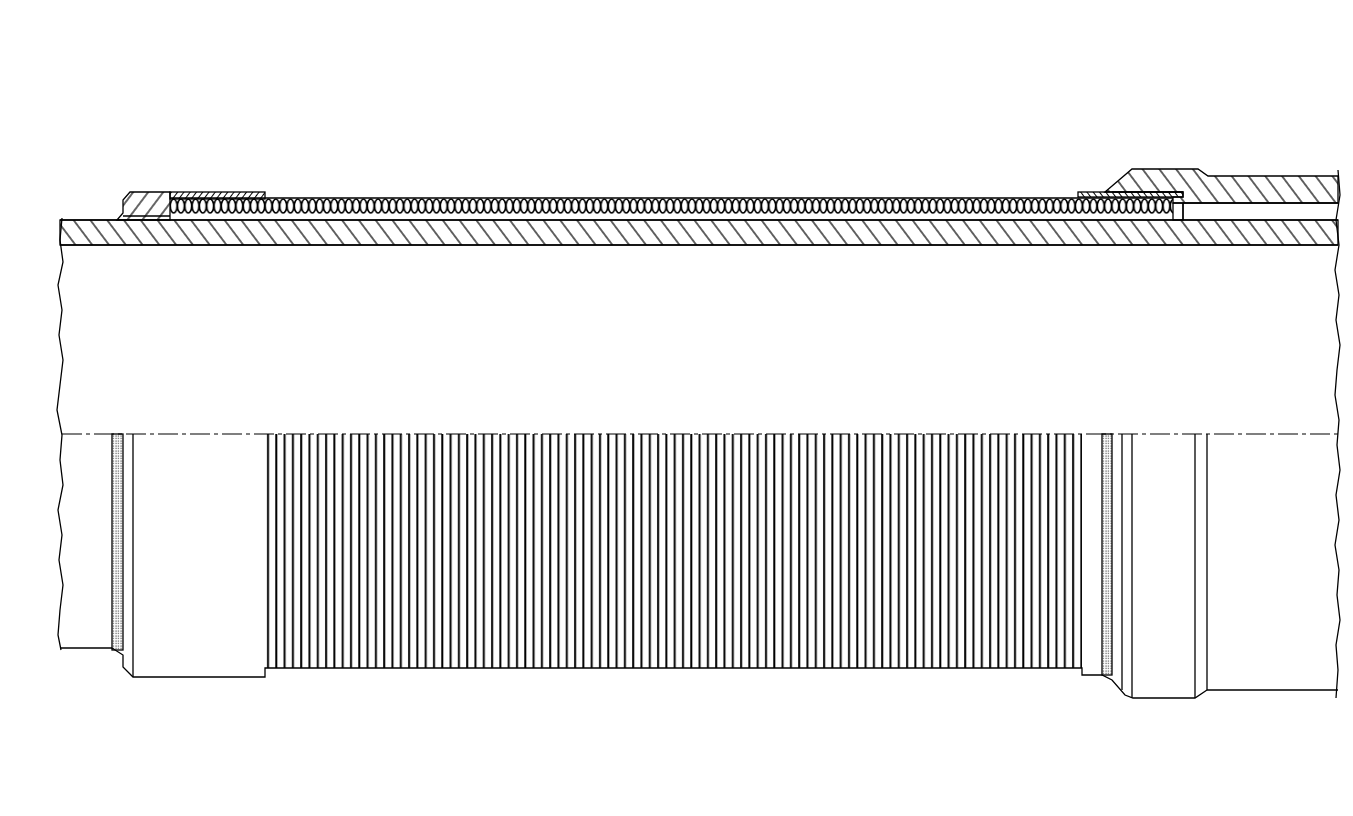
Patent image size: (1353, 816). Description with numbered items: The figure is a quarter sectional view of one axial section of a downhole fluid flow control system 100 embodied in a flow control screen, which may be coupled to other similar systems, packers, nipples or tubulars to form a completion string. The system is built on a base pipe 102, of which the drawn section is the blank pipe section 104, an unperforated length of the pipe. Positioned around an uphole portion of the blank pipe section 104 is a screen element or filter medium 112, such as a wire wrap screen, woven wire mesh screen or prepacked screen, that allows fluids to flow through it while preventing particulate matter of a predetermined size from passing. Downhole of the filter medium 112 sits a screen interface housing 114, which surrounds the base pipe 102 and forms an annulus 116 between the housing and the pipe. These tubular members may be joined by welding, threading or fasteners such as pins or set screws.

The fluid flow control system 100 is at (911, 98).
The base pipe 102 is at (1045, 246).
The blank pipe section 104 is at (599, 246).
The filter medium 112 is at (466, 198).
The screen interface housing 114 is at (1240, 183).
The annulus 116 is at (1303, 213).